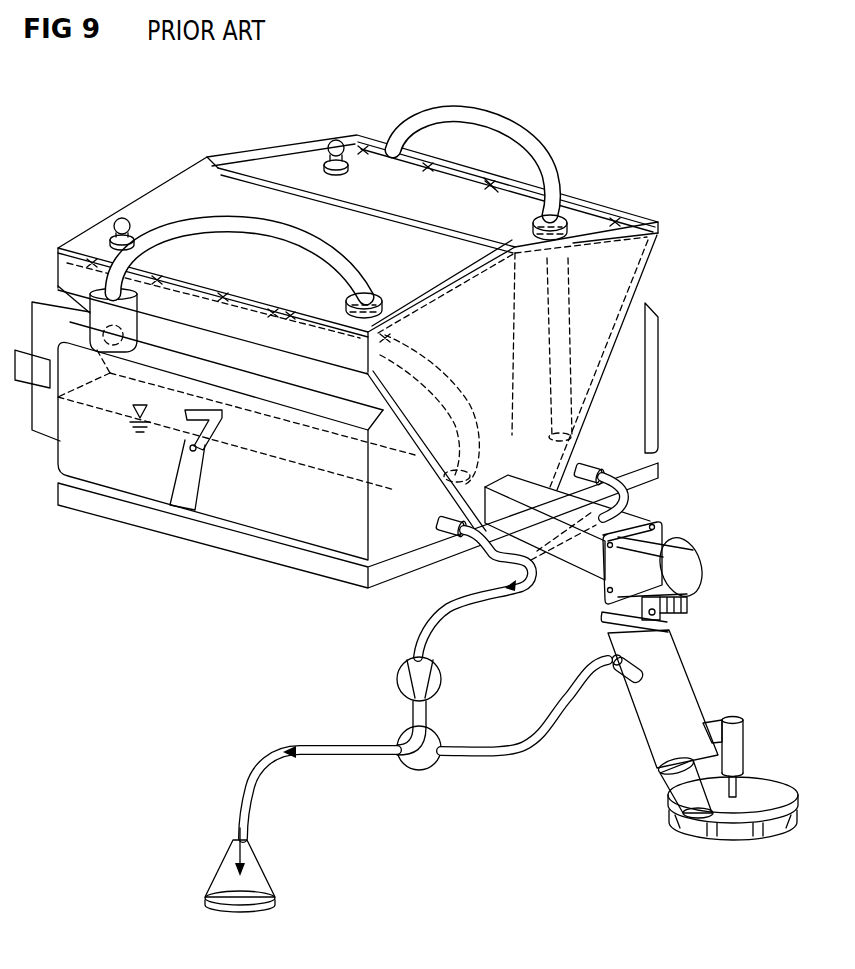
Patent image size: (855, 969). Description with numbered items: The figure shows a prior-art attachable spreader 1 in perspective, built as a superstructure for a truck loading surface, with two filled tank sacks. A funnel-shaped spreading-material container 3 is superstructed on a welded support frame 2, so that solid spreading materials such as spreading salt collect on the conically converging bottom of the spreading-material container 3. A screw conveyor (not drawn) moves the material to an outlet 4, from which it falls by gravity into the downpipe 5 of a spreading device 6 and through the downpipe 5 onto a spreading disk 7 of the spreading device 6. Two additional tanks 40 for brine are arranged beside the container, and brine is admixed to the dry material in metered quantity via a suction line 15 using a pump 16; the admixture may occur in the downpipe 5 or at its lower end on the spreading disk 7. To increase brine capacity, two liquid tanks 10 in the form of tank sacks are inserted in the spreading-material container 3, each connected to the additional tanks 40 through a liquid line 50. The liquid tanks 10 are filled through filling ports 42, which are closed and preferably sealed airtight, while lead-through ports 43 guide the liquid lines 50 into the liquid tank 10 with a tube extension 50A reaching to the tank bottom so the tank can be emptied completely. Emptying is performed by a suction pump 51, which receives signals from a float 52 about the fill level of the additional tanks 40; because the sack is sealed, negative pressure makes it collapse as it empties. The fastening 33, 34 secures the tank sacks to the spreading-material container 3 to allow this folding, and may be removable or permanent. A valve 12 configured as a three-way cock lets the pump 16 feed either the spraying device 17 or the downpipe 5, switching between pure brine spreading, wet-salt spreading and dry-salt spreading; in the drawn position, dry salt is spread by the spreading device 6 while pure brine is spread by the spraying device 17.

The attachable spreader 1 is at (182, 138).
The support frame 2 is at (181, 530).
The spreading-material container 3 is at (660, 224).
The outlet 4 is at (663, 540).
The downpipe 5 is at (690, 691).
The spreading device 6 is at (764, 708).
The spreading disk 7 is at (740, 834).
The liquid tank 10 is at (168, 212).
The valve 12 is at (417, 772).
The suction line 15 is at (455, 612).
The pump 16 is at (396, 680).
The spraying device 17 is at (230, 870).
The fastening 33 is at (495, 184).
The fastening 34 is at (489, 191).
The additional tank 40 is at (130, 483).
The filling port 42 is at (117, 220).
The lead-through port 43 is at (537, 227).
The liquid line 50 is at (462, 125).
The tube extension 50A is at (438, 363).
The suction pump 51 is at (138, 318).
The float 52 is at (200, 488).